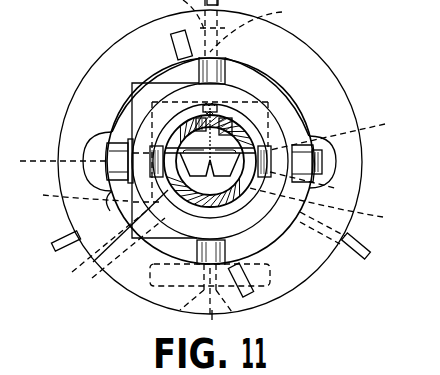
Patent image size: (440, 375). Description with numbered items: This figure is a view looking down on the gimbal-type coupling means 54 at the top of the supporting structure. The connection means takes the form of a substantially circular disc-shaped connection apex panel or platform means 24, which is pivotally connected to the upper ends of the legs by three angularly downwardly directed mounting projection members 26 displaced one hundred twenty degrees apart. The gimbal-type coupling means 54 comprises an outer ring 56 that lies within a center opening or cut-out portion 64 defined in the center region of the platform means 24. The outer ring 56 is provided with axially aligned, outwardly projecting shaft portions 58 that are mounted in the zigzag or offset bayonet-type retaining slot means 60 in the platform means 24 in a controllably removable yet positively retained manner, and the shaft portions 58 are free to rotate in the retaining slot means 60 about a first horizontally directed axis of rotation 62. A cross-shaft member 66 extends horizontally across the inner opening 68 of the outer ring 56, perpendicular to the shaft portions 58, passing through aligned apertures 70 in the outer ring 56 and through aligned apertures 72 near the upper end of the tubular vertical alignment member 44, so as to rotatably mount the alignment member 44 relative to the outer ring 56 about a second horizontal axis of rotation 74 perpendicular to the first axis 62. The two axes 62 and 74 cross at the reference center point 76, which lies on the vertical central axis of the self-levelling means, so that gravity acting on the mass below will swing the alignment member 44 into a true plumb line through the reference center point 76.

The connection apex panel or platform means 24 is at (318, 67).
The mounting projection members 26 is at (52, 243).
The tubular vertical alignment member 44 is at (277, 182).
The gimbal-type coupling means 54 is at (190, 72).
The outer ring 56 is at (340, 196).
The shaft portions 58 is at (163, 318).
The retaining slot means 60 is at (233, 312).
The first axis of rotation 62 is at (207, 328).
The center opening or cut-out portion 64 is at (263, 85).
The cross-shaft member 66 is at (110, 205).
The inner opening 68 is at (261, 142).
The aligned apertures 70 is at (214, 161).
The aligned apertures 72 is at (227, 236).
The second axis of rotation 74 is at (38, 161).
The reference center point 76 is at (176, 186).